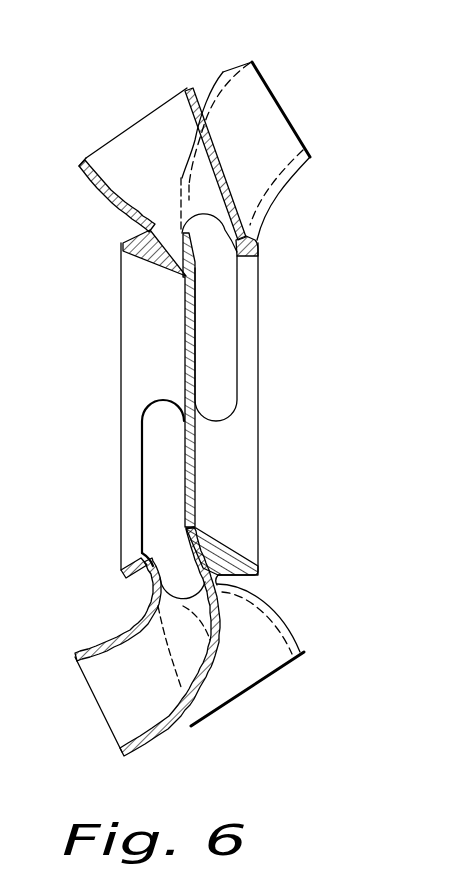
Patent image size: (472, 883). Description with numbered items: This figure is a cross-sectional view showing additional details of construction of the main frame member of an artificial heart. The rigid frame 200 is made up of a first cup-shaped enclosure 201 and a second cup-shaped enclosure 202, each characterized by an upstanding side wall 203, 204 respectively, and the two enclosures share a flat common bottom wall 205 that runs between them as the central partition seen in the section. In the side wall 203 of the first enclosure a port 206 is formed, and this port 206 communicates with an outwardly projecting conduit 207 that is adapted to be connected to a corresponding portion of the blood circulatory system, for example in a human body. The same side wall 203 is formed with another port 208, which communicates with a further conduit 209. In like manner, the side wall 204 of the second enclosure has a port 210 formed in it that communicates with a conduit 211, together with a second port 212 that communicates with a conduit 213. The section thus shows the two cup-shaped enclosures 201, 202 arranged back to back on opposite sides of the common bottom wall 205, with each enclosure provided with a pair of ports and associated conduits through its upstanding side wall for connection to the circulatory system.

The rigid frame 200 is at (123, 242).
The first cup-shaped enclosure 201 is at (153, 367).
The second cup-shaped enclosure 202 is at (244, 422).
The side wall 203 is at (121, 563).
The side wall 204 is at (230, 550).
The flat common bottom wall 205 is at (185, 433).
The port 206 is at (140, 472).
The conduit 207 is at (95, 642).
The port 208 is at (250, 680).
The conduit 209 is at (220, 695).
The port 210 is at (238, 326).
The conduit 211 is at (101, 152).
The second port 212 is at (207, 210).
The conduit 213 is at (223, 72).